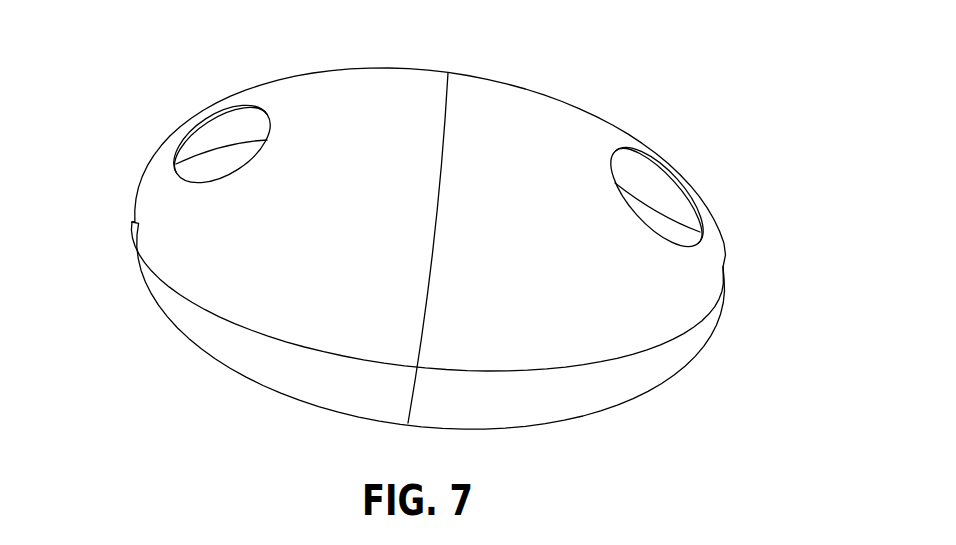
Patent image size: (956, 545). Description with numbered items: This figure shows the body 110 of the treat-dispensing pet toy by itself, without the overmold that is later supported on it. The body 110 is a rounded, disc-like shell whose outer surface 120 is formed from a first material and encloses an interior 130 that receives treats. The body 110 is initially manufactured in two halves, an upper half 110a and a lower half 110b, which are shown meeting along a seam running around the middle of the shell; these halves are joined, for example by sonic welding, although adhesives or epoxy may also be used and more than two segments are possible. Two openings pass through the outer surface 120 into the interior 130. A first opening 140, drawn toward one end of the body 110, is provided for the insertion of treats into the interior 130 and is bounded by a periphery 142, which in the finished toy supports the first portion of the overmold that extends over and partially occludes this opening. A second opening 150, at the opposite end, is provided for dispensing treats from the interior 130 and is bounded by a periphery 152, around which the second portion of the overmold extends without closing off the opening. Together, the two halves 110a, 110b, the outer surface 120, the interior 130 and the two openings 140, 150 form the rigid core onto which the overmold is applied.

The body 110 is at (386, 246).
The body half 110a is at (380, 98).
The body half 110b is at (315, 382).
The outer surface 120 is at (540, 115).
The interior 130 is at (212, 165).
The first opening 140 is at (205, 103).
The periphery of the first opening 142 is at (254, 155).
The second opening 150 is at (705, 155).
The periphery of the second opening 152 is at (633, 215).